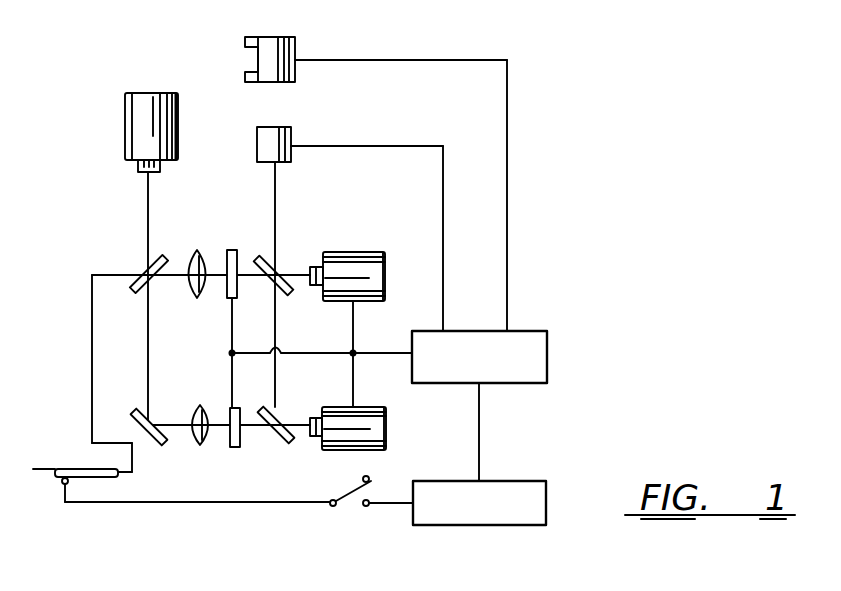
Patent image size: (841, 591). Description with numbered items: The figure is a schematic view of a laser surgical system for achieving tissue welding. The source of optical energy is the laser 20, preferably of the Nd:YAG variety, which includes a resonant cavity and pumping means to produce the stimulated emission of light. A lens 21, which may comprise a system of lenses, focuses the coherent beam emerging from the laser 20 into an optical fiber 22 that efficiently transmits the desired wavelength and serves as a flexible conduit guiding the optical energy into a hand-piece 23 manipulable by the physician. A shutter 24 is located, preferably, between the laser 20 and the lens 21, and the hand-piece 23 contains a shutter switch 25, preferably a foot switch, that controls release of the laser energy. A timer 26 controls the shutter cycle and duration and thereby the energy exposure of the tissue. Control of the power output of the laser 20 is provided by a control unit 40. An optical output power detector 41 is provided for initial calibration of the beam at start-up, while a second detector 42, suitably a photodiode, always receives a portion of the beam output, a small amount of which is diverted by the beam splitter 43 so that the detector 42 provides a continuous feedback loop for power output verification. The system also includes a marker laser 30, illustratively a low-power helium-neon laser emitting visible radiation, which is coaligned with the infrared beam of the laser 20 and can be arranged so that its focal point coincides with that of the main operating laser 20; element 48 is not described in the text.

The laser 20 is at (355, 251).
The lens 21 is at (203, 253).
The optical fiber 22 is at (144, 271).
The hand-piece 23 is at (77, 460).
The shutter 24 is at (239, 254).
The shutter switch 25 is at (58, 484).
The timer 26 is at (547, 505).
The marker laser 30 is at (125, 127).
The control unit 40 is at (529, 330).
The optical output power detector 41 is at (296, 38).
The second detector 42 is at (291, 128).
The beam splitter 43 is at (278, 268).
The camera 48 is at (389, 431).